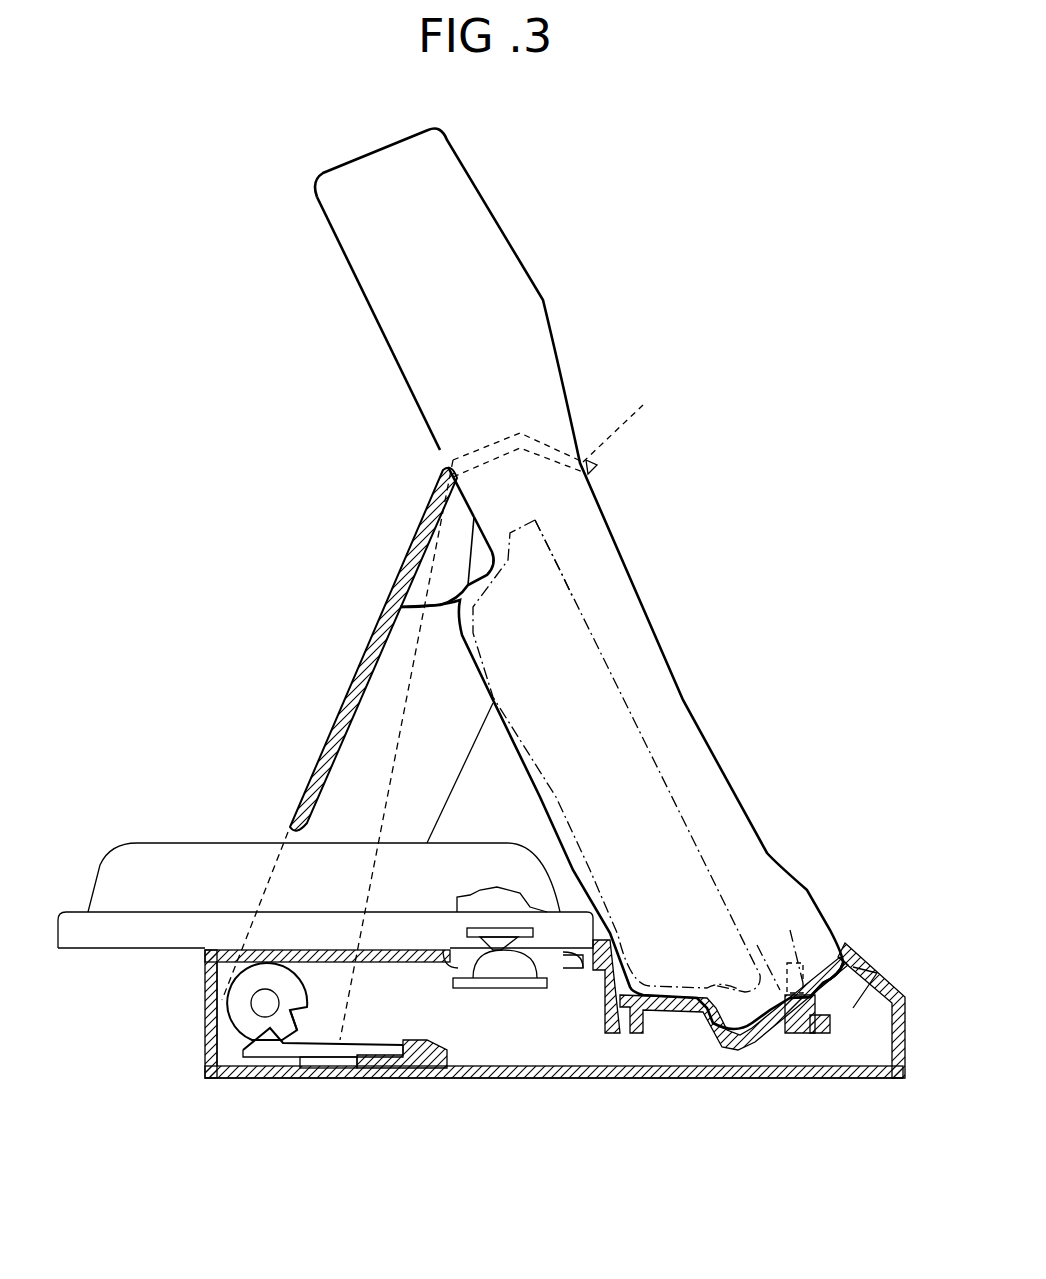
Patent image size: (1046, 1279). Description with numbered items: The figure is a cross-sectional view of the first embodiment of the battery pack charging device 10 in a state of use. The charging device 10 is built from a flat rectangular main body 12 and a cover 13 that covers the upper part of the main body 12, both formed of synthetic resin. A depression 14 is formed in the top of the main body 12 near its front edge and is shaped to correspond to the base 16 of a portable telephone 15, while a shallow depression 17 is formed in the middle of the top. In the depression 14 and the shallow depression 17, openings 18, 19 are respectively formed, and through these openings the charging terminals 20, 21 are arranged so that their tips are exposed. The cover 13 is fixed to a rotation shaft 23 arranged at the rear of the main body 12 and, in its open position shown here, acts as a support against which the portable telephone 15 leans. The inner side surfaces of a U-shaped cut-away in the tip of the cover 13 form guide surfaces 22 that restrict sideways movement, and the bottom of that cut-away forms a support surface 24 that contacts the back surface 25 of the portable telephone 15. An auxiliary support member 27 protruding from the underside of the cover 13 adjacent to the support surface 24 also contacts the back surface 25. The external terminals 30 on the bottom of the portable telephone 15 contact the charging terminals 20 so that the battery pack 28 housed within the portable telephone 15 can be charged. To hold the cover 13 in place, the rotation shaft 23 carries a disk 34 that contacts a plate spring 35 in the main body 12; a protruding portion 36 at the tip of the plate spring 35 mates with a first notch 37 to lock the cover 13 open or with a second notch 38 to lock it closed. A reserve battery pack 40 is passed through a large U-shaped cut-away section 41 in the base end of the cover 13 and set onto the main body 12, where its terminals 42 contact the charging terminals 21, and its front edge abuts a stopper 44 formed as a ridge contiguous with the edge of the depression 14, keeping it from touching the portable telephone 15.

The charging device 10 is at (665, 1085).
The main body 12 is at (543, 1079).
The cover 13 is at (339, 714).
The depression 14 is at (750, 1036).
The portable telephone 15 is at (484, 200).
The base 16 is at (772, 990).
The shallow depression 17 is at (600, 975).
The opening 18 is at (820, 1035).
The opening 19 is at (563, 975).
The charging terminals 20 is at (790, 1035).
The charging terminals 21 is at (490, 990).
The guide surfaces 22 is at (572, 427).
The rotation shaft 23 is at (262, 1003).
The support surface 24 is at (446, 468).
The back surface 25 is at (413, 393).
The auxiliary support member 27 is at (441, 553).
The battery pack 28 is at (575, 598).
The external terminals 30 is at (800, 987).
The disk 34 is at (233, 977).
The plate spring 35 is at (306, 1058).
The protruding portion 36 is at (244, 1050).
The first notch 37 is at (228, 1032).
The second notch 38 is at (295, 1018).
The reserve battery pack 40 is at (157, 842).
The cut-away section 41 is at (270, 825).
The terminals 42 is at (497, 926).
The stopper 44 is at (598, 905).